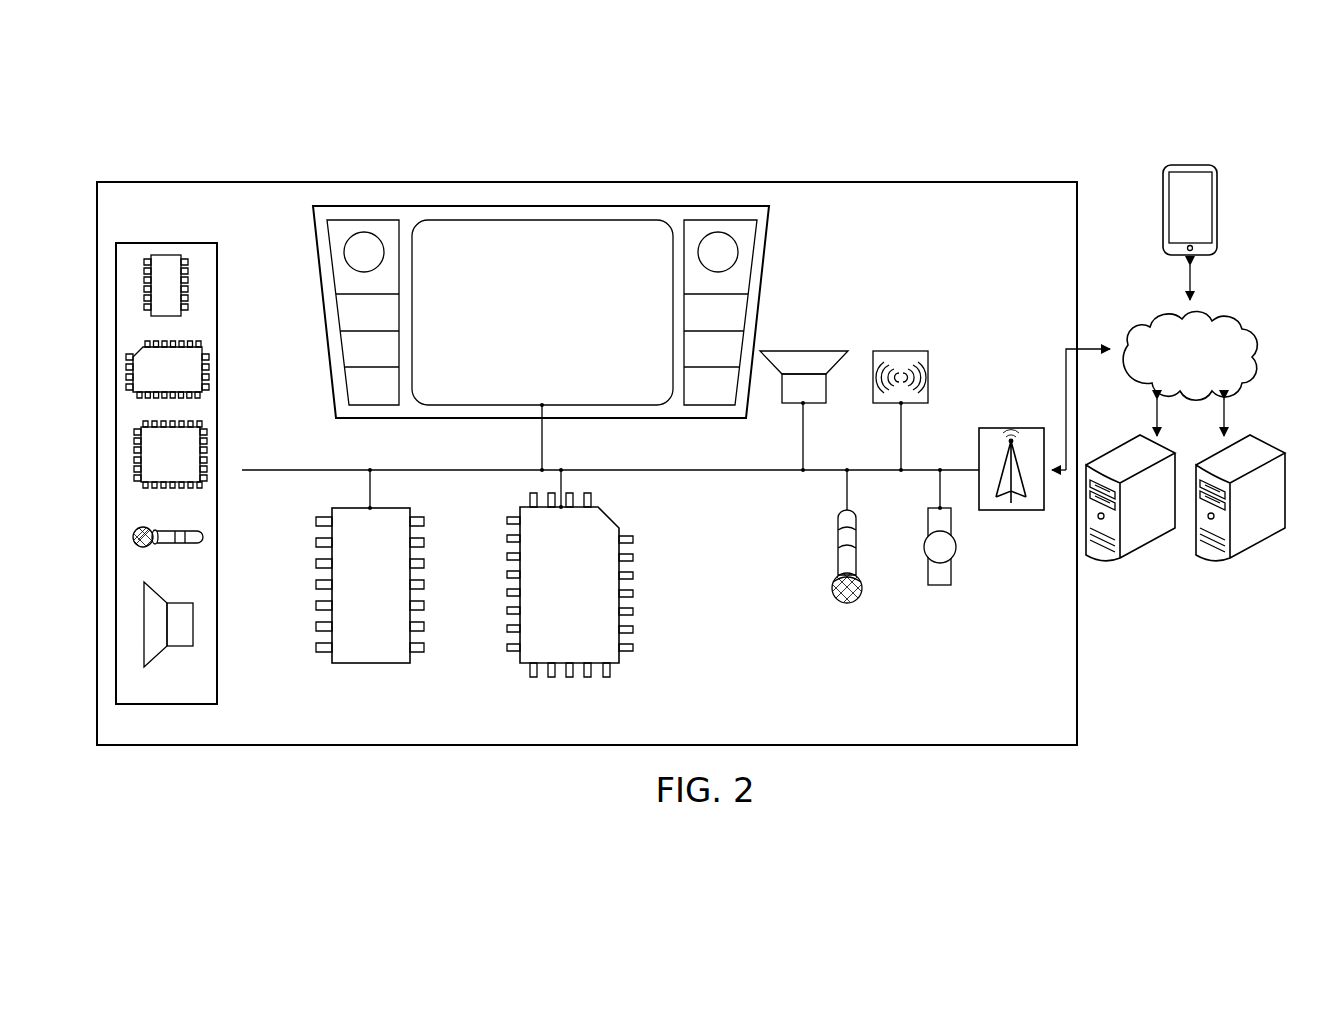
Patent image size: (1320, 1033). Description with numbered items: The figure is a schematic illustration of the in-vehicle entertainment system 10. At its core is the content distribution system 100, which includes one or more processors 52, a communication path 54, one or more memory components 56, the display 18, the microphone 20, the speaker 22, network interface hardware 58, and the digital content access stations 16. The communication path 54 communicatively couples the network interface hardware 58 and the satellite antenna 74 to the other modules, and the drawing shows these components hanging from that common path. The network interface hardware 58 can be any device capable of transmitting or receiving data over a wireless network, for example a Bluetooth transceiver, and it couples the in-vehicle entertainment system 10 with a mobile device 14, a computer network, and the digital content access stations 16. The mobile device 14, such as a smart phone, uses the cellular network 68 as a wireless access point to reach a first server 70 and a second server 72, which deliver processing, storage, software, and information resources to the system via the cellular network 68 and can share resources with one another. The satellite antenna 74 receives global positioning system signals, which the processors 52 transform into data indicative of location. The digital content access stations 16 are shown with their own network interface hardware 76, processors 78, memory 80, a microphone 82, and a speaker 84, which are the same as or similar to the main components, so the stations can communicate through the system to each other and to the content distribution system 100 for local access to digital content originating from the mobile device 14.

The in-vehicle entertainment system 10 is at (911, 155).
The mobile device 14 is at (1220, 148).
The digital content access stations 16 is at (192, 236).
The display 18 is at (457, 200).
The content distribution system 100 is at (782, 200).
The microphone 20 is at (836, 575).
The speaker 22 is at (803, 351).
The processors 52 is at (525, 663).
The communication path 54 is at (283, 470).
The memory components 56 is at (370, 663).
The network interface hardware 58 is at (901, 351).
The cellular network 68 is at (1254, 306).
The first server 70 is at (1148, 564).
The second server 72 is at (1258, 564).
The satellite antenna 74 is at (1012, 423).
The network interface hardware 76 is at (188, 285).
The processors 78 is at (209, 368).
The memory 80 is at (207, 441).
The microphone 82 is at (203, 537).
The speaker 84 is at (193, 625).